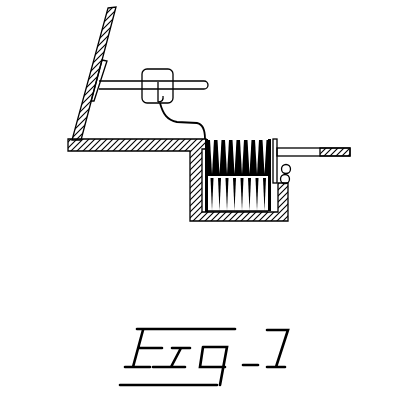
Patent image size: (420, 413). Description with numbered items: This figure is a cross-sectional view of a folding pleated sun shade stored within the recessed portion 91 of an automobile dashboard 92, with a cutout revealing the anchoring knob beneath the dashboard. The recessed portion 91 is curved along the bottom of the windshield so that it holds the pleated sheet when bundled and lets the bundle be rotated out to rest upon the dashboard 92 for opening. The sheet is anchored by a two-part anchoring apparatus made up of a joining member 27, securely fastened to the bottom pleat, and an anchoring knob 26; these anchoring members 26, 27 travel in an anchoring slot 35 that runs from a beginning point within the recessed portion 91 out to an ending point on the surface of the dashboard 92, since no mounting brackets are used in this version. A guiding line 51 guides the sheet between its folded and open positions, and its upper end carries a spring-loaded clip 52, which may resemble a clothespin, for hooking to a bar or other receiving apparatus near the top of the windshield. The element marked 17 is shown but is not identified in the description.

The support plate 17 is at (99, 40).
The spring-loaded clip 52 is at (165, 73).
The guiding line 51 is at (203, 127).
The anchoring slot 35 is at (291, 147).
The dashboard 92 is at (350, 146).
The joining member 27 is at (288, 165).
The anchoring knob 26 is at (290, 183).
The recessed portion 91 is at (178, 218).